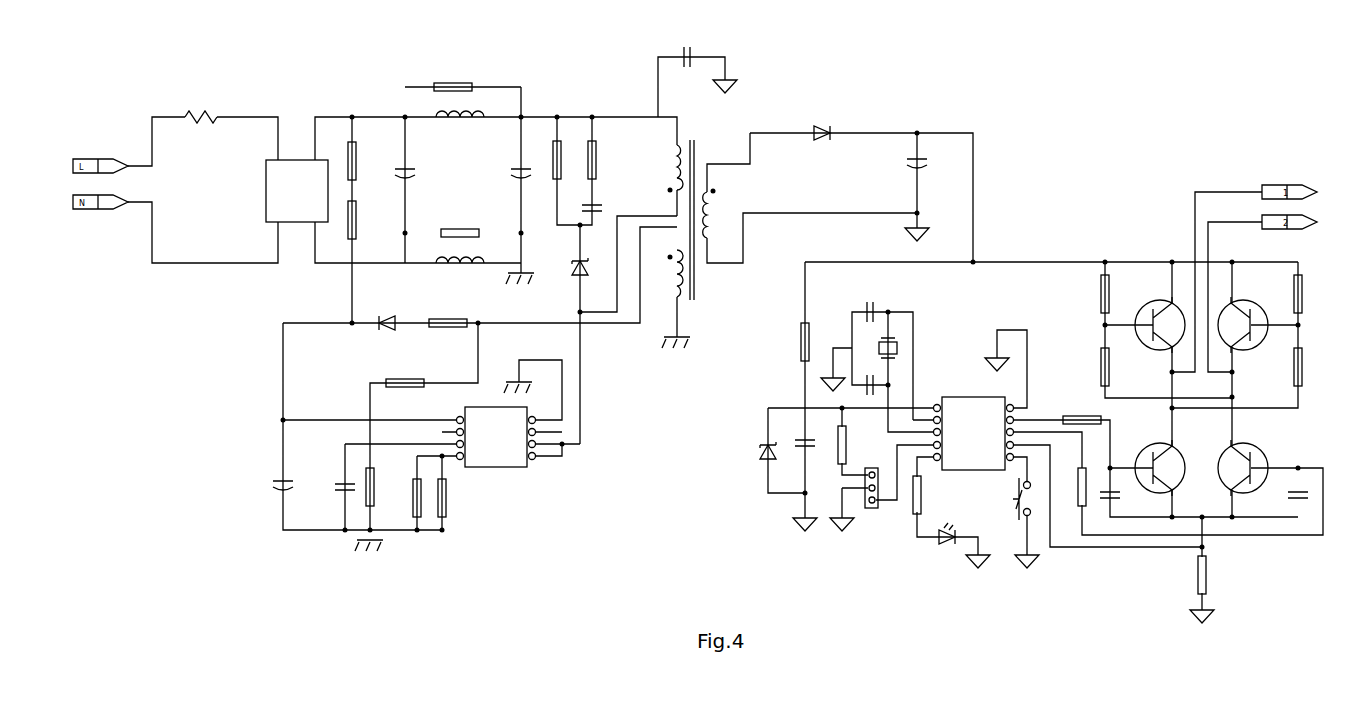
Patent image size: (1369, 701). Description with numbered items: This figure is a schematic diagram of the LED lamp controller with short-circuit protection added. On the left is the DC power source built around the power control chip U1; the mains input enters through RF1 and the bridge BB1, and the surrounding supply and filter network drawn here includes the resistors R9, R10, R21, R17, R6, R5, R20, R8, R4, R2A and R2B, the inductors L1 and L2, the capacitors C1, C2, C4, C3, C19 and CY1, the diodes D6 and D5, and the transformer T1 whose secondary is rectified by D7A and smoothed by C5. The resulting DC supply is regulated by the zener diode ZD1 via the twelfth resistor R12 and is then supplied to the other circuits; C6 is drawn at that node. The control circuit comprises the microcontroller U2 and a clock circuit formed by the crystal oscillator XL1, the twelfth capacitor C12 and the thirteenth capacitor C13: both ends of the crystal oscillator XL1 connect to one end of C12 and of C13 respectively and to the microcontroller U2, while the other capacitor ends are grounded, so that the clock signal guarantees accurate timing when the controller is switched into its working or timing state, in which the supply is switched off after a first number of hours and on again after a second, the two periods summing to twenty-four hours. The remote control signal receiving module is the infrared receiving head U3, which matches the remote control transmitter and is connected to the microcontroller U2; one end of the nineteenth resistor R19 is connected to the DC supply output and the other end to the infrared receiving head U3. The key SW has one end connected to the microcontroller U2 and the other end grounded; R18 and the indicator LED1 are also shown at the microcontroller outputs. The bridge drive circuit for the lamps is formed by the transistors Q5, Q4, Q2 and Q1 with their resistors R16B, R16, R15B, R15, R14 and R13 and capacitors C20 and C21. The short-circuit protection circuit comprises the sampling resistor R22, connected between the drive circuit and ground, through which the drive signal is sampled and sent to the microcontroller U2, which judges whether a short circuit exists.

The fuse resistor RF1 is at (201, 110).
The bridge rectifier BB1 is at (282, 190).
The resistor R9 is at (361, 161).
The resistor R10 is at (361, 220).
The resistor R21 is at (453, 80).
The inductor L1 is at (460, 107).
The capacitor C1 is at (410, 182).
The capacitor C2 is at (514, 182).
The resistor R17 is at (460, 226).
The inductor L2 is at (460, 254).
The resistor R6 is at (549, 160).
The resistor R5 is at (601, 160).
The capacitor C4 is at (597, 202).
The diode D6 is at (586, 261).
The Y capacitor CY1 is at (685, 51).
The transformer T1 is at (692, 213).
The diode D7A is at (819, 127).
The capacitor C5 is at (922, 158).
The diode D5 is at (387, 330).
The resistor R20 is at (448, 332).
The resistor R8 is at (405, 391).
The power control chip U1 is at (496, 430).
The capacitor C3 is at (278, 479).
The capacitor C19 is at (335, 480).
The resistor R4 is at (378, 487).
The resistor R2A is at (413, 515).
The resistor R2B is at (443, 515).
The twelfth resistor R12 is at (793, 342).
The twelfth capacitor C12 is at (869, 305).
The crystal oscillator XL1 is at (895, 342).
The thirteenth capacitor C13 is at (867, 379).
The microcontroller U2 is at (974, 426).
The zener diode ZD1 is at (760, 448).
The capacitor C6 is at (810, 437).
The nineteenth resistor R19 is at (855, 445).
The infrared receiving head U3 is at (871, 480).
The resistor R18 is at (929, 495).
The light emitting diode LED1 is at (946, 543).
The key SW is at (1015, 499).
The resistor R14 is at (1082, 412).
The resistor R13 is at (1093, 487).
The capacitor C20 is at (1119, 502).
The transistor Q2 is at (1160, 463).
The transistor Q1 is at (1243, 463).
The capacitor C21 is at (1287, 494).
The sampling resistor R22 is at (1215, 575).
The resistor R16B is at (1089, 294).
The resistor R16 is at (1094, 367).
The transistor Q5 is at (1160, 320).
The transistor Q4 is at (1243, 320).
The resistor R15B is at (1314, 294).
The resistor R15 is at (1311, 367).